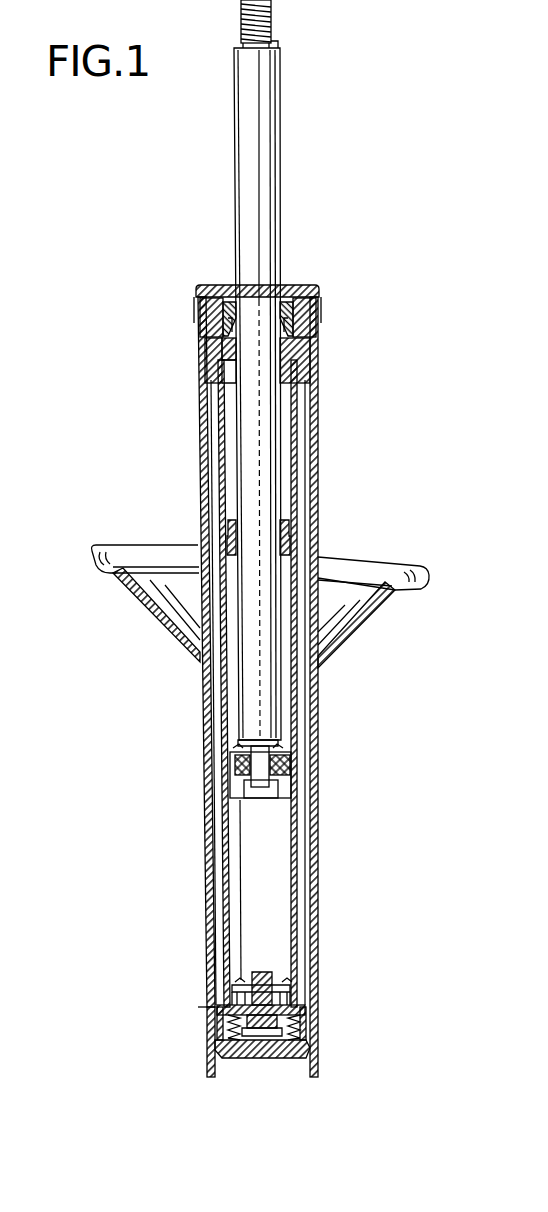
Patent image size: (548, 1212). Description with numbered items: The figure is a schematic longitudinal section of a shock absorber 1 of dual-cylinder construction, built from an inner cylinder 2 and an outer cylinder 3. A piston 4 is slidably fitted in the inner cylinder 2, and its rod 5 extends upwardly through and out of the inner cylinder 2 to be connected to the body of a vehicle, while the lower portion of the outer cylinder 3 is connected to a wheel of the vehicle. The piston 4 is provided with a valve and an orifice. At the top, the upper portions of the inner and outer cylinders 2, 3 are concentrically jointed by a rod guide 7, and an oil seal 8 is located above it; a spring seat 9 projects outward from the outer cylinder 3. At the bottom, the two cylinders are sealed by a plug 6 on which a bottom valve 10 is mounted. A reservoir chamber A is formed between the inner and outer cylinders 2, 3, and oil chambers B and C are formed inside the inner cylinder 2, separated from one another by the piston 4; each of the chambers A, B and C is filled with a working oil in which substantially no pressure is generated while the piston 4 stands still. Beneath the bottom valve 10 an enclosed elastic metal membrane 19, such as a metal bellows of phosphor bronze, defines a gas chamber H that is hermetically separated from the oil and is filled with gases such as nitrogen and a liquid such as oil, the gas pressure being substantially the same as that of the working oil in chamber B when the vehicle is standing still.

The shock absorber 1 is at (322, 711).
The inner cylinder 2 is at (222, 818).
The outer cylinder 3 is at (205, 739).
The piston 4 is at (290, 780).
The rod 5 is at (268, 141).
The plug 6 is at (256, 1060).
The rod guide 7 is at (300, 347).
The oil seal 8 is at (318, 317).
The spring seat 9 is at (427, 580).
The bottom valve 10 is at (294, 985).
The elastic metal membrane 19 is at (302, 1033).
The reservoir chamber A is at (212, 890).
The oil chamber B is at (280, 846).
The oil chamber C is at (288, 567).
The gas chamber H is at (220, 1038).